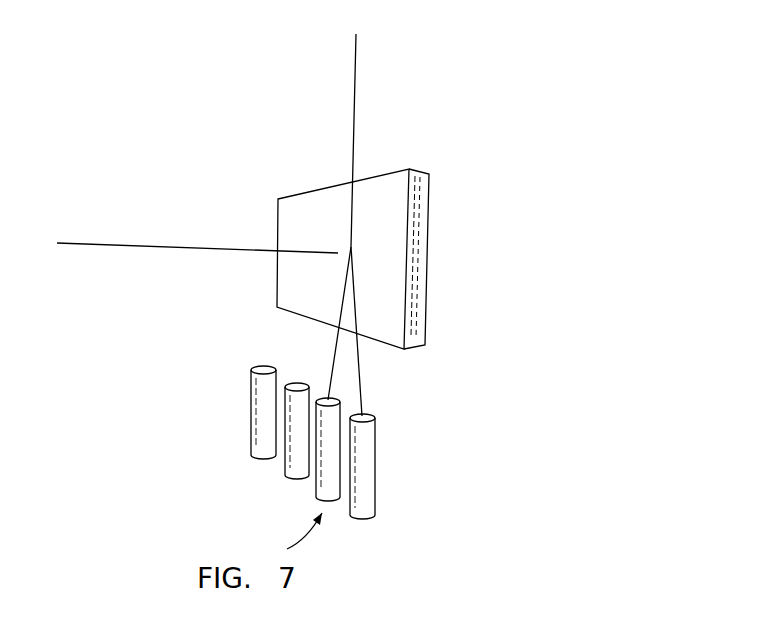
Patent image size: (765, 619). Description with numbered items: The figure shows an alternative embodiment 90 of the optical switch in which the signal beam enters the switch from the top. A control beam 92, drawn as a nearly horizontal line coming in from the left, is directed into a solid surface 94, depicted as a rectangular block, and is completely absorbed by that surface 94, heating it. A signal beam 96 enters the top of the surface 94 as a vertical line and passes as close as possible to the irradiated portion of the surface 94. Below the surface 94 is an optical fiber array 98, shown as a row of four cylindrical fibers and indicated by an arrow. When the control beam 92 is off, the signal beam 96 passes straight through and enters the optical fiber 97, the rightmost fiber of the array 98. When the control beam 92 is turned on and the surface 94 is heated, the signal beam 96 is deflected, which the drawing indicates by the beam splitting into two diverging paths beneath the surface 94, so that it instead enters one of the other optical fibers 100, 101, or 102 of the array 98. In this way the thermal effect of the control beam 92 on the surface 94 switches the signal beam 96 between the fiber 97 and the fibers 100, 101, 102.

The alternative embodiment 90 is at (492, 190).
The control beam 92 is at (174, 246).
The solid surface 94 is at (388, 168).
The signal beam 96 is at (352, 90).
The optical fiber 97 is at (367, 500).
The optical fiber array 98 is at (290, 537).
The optical fiber 100 is at (322, 482).
The optical fiber 101 is at (288, 464).
The optical fiber 102 is at (250, 428).